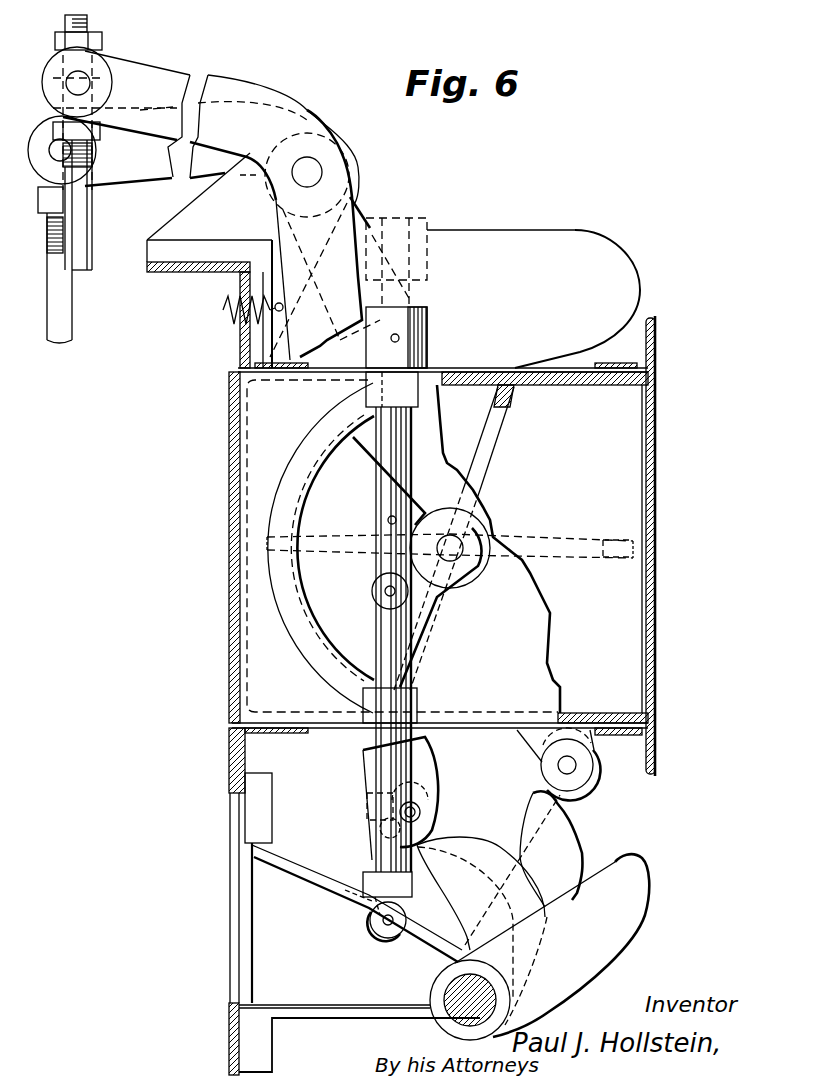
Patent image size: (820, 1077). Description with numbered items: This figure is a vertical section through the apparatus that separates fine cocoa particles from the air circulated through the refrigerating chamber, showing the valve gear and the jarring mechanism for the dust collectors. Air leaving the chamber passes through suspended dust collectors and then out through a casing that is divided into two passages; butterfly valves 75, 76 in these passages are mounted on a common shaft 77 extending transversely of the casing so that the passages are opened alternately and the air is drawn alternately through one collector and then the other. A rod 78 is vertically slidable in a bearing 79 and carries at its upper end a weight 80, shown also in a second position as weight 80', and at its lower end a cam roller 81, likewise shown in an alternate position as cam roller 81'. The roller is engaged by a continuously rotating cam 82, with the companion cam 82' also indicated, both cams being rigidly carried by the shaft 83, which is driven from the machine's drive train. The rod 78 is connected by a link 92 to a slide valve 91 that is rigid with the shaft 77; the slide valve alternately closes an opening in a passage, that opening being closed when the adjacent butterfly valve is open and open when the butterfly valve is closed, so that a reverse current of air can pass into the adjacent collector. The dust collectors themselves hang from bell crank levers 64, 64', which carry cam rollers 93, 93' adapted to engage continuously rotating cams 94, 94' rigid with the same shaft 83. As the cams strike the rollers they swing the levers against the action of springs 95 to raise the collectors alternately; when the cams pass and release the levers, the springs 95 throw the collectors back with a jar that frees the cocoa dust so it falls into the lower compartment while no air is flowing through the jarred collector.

The bell crank lever 64 is at (211, 187).
The bell crank lever 64' is at (126, 229).
The spring 95 is at (242, 321).
The weight 80' is at (503, 285).
The weight 80 is at (421, 335).
The bearing 79 is at (372, 380).
The rod 78 is at (387, 467).
The butterfly valve 75 is at (488, 450).
The shaft 77 is at (455, 545).
The butterfly valve 76 is at (553, 547).
The link 92 is at (372, 591).
The slide valve 91 is at (340, 626).
The cam roller 93 is at (440, 812).
The cam roller 93' is at (575, 768).
The cam 82 is at (461, 881).
The cam 94' is at (575, 849).
The cam 94 is at (581, 945).
The cam roller 81' is at (356, 815).
The cam 82' is at (365, 879).
The cam roller 81 is at (375, 936).
The shaft 83 is at (457, 1010).